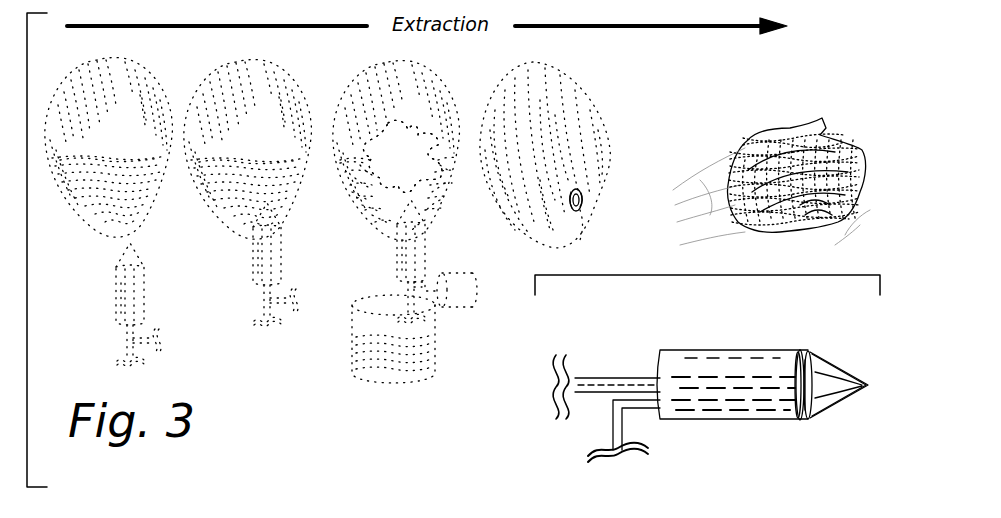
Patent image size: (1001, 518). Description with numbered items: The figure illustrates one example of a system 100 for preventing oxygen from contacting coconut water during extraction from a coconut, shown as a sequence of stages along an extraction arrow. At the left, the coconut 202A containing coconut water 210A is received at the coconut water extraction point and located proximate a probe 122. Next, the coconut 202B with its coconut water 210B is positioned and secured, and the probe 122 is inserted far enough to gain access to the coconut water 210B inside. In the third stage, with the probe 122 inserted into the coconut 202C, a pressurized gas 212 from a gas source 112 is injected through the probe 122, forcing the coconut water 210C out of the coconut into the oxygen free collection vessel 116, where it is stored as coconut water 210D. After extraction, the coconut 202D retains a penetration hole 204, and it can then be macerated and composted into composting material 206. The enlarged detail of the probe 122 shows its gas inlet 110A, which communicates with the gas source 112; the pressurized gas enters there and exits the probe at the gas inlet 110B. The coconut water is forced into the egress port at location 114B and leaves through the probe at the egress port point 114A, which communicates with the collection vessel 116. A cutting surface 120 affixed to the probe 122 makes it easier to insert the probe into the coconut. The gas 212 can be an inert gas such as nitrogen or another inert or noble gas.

The system 100 is at (714, 108).
The gas inlet 110A is at (618, 421).
The gas inlet 110B is at (803, 416).
The gas source 112 is at (457, 298).
The egress port 114A is at (622, 378).
The egress port 114B is at (800, 380).
The oxygen free collection vessel 116 is at (356, 333).
The cutting surface 120 is at (807, 360).
The probe 122 is at (117, 326).
The coconut 202A is at (100, 92).
The coconut 202B is at (273, 92).
The coconut 202C is at (418, 96).
The coconut 202D is at (593, 134).
The penetration hole 204 is at (580, 205).
The composting material 206 is at (789, 130).
The coconut water 210A is at (110, 217).
The coconut water 210B is at (240, 212).
The coconut water 210C is at (382, 198).
The coconut water 210D is at (425, 366).
The pressurized gas 212 is at (412, 165).